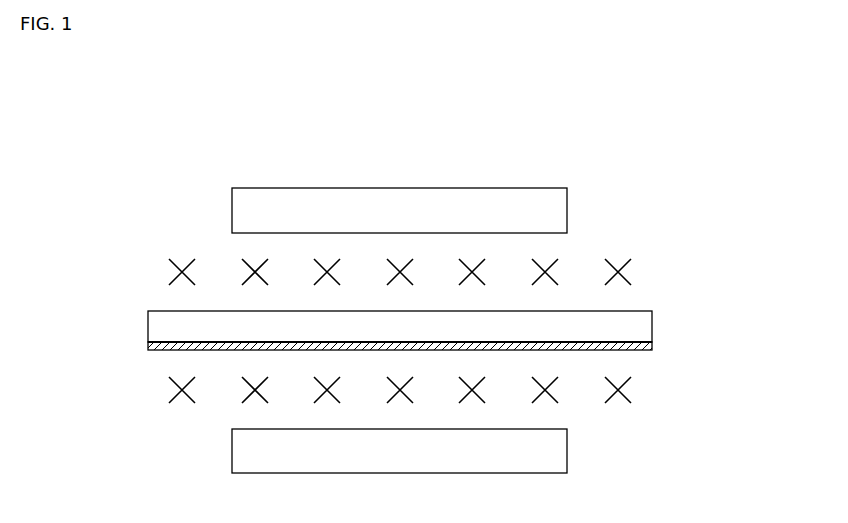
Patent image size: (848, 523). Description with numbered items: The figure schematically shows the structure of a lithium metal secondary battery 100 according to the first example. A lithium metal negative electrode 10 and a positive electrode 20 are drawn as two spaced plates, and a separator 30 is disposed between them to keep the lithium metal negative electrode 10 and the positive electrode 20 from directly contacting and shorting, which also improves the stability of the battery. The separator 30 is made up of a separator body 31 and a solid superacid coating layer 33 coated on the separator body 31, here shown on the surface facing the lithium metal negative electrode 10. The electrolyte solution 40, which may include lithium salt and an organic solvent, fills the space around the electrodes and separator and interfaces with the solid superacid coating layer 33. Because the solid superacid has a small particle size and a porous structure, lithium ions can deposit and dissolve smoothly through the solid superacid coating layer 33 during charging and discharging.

The lithium metal secondary battery 100 is at (496, 146).
The lithium metal negative electrode 10 is at (557, 448).
The positive electrode 20 is at (557, 209).
The separator 30 is at (337, 343).
The separator body 31 is at (148, 326).
The solid superacid coating layer 33 is at (148, 346).
The electrolyte solution 40 is at (628, 279).